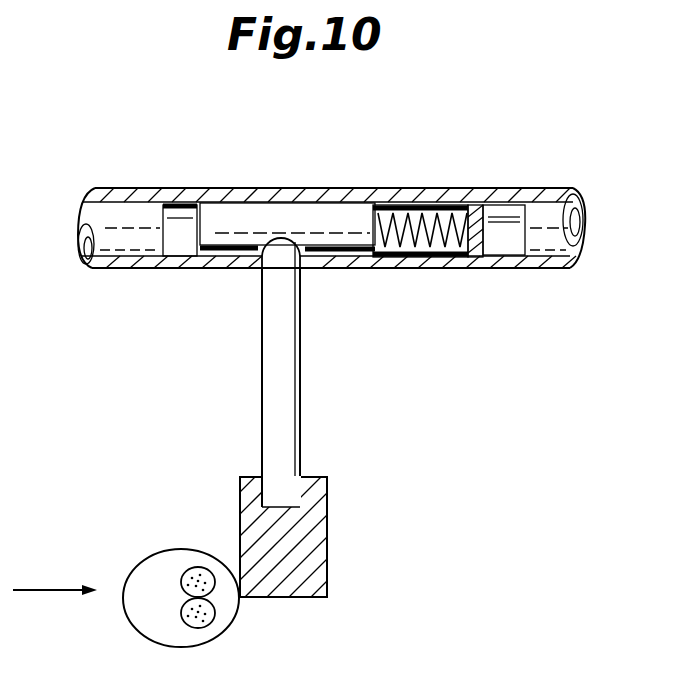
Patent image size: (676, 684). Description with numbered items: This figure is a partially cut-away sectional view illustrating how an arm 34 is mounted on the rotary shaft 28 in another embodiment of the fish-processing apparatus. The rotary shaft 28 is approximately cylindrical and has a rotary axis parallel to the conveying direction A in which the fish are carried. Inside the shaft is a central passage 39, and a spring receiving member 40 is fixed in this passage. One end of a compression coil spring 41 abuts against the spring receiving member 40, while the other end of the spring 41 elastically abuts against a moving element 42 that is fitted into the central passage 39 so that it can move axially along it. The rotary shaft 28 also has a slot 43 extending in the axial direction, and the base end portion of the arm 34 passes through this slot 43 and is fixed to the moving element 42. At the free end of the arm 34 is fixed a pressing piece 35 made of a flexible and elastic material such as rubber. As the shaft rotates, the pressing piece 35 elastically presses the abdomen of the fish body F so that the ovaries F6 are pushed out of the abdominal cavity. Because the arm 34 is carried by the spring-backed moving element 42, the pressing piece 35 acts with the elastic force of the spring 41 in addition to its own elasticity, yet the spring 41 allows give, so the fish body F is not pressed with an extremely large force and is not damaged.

The rotary shaft 28 is at (552, 200).
The moving element 42 is at (255, 197).
The compression coil spring 41 is at (422, 238).
The spring receiving member 40 is at (457, 205).
The central passage 39 is at (508, 200).
The slot 43 is at (338, 273).
The arm 34 is at (292, 415).
The pressing piece 35 is at (308, 548).
The fish body F is at (147, 572).
The ovaries F6 is at (212, 587).
The conveying direction A is at (42, 588).